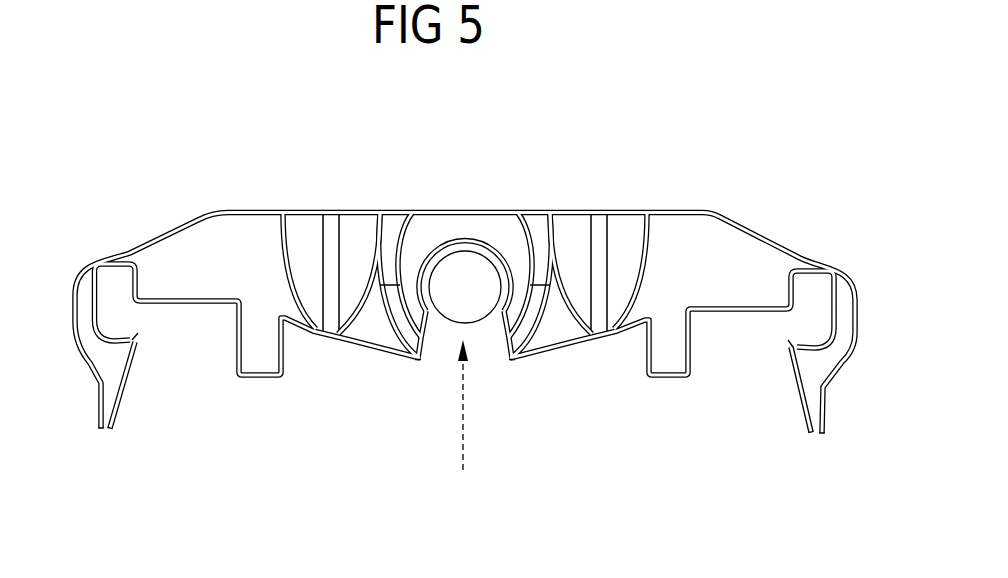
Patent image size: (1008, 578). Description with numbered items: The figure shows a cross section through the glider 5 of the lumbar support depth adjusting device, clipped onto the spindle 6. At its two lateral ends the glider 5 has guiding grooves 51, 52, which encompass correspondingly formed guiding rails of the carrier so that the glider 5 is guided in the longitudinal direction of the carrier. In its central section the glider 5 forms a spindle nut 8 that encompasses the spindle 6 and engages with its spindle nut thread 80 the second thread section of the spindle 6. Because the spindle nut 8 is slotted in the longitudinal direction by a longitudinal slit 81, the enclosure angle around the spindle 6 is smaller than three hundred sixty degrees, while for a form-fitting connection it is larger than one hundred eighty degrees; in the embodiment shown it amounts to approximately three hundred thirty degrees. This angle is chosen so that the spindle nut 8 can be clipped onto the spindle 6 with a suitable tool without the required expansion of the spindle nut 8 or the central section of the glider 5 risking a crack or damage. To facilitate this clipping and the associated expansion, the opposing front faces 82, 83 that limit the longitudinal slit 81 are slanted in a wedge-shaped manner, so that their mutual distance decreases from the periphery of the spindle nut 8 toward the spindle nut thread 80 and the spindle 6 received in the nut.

The glider 5 is at (260, 228).
The guiding groove 51 is at (105, 327).
The guiding groove 52 is at (820, 333).
The spindle 6 is at (465, 262).
The spindle nut 8 is at (428, 242).
The spindle nut thread 80 is at (503, 257).
The longitudinal slit 81 is at (467, 429).
The front face 82 is at (425, 353).
The front face 83 is at (502, 355).